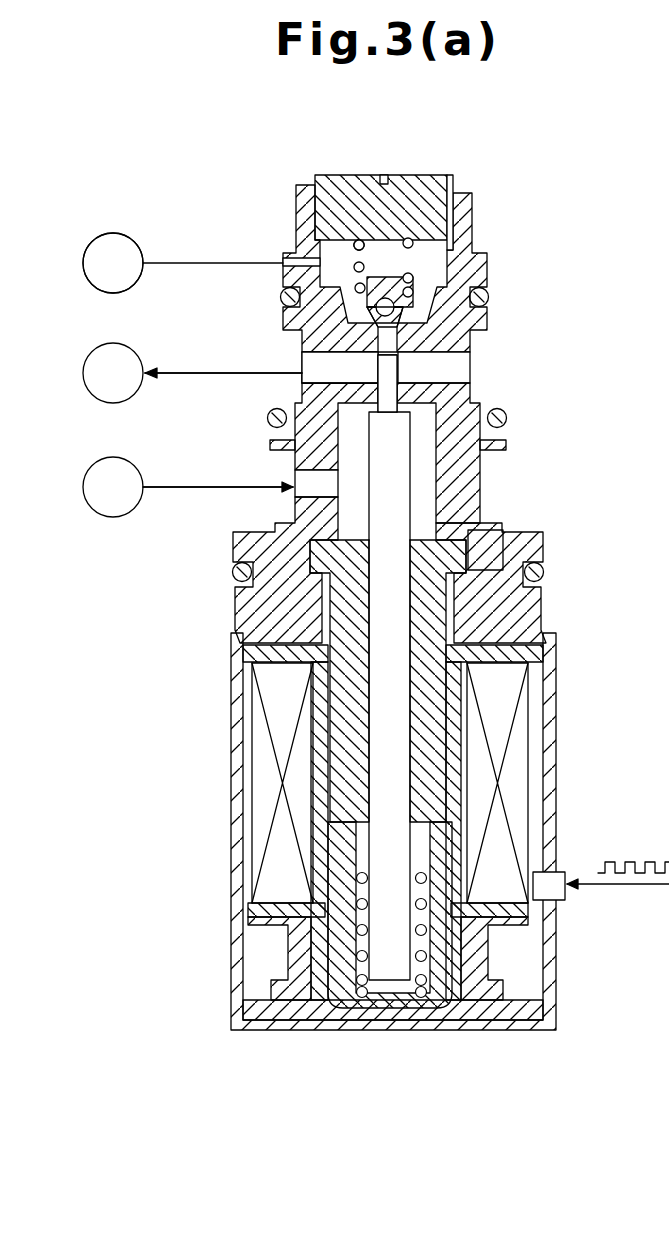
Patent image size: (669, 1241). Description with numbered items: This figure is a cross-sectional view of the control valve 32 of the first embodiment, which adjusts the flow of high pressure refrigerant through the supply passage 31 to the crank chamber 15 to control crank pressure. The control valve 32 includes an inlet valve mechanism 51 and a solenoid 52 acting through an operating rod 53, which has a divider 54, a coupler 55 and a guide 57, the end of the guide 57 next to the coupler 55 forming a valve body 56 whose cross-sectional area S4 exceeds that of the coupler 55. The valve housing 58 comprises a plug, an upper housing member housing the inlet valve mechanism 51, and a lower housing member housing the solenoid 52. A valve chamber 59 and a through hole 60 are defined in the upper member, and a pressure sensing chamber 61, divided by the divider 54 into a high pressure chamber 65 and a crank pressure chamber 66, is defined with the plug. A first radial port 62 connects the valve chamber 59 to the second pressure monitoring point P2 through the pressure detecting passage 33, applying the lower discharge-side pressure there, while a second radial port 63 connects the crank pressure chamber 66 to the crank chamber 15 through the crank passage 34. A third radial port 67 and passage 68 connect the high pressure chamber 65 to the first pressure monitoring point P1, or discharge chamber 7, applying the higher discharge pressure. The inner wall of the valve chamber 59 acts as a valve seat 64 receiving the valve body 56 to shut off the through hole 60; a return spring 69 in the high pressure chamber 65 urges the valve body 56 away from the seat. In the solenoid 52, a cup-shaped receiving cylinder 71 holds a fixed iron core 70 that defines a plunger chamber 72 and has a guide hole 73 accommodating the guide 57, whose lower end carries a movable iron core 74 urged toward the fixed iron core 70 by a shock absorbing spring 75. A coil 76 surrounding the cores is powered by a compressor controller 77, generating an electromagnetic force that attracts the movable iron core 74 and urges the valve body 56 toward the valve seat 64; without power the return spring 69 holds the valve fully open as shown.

The control valve 32 is at (537, 198).
The inlet valve mechanism 51 is at (477, 258).
The solenoid 52 is at (230, 818).
The operating rod 53 is at (405, 573).
The divider 54 is at (403, 333).
The coupler 55 is at (400, 363).
The valve body 56 is at (403, 425).
The guide 57 is at (380, 718).
The valve housing 58 is at (431, 185).
The valve chamber 59 is at (423, 487).
The through hole 60 is at (383, 407).
The pressure sensing chamber 61 is at (293, 387).
The first radial port 62 is at (293, 497).
The second radial port 63 is at (302, 363).
The valve seat 64 is at (410, 380).
The high pressure chamber 65 is at (337, 250).
The crank pressure chamber 66 is at (293, 387).
The third radial port 67 is at (290, 258).
The passage 68 is at (168, 260).
The return spring 69 is at (408, 242).
The fixed iron core 70 is at (503, 537).
The receiving cylinder 71 is at (453, 717).
The plunger chamber 72 is at (350, 993).
The guide hole 73 is at (450, 753).
The movable iron core 74 is at (447, 1000).
The shock absorbing spring 75 is at (357, 1010).
The coil 76 is at (283, 857).
The compressor controller 77 is at (601, 919).
The discharge chamber 7 is at (92, 242).
The crank chamber 15 is at (95, 351).
The supply passage 31 is at (190, 376).
The pressure detecting passage 33 is at (218, 532).
The crank passage 34 is at (223, 417).
The first pressure monitoring point P1 is at (96, 246).
The second pressure monitoring point P2 is at (95, 466).
The cross-sectional area of the valve body S4 is at (657, 469).